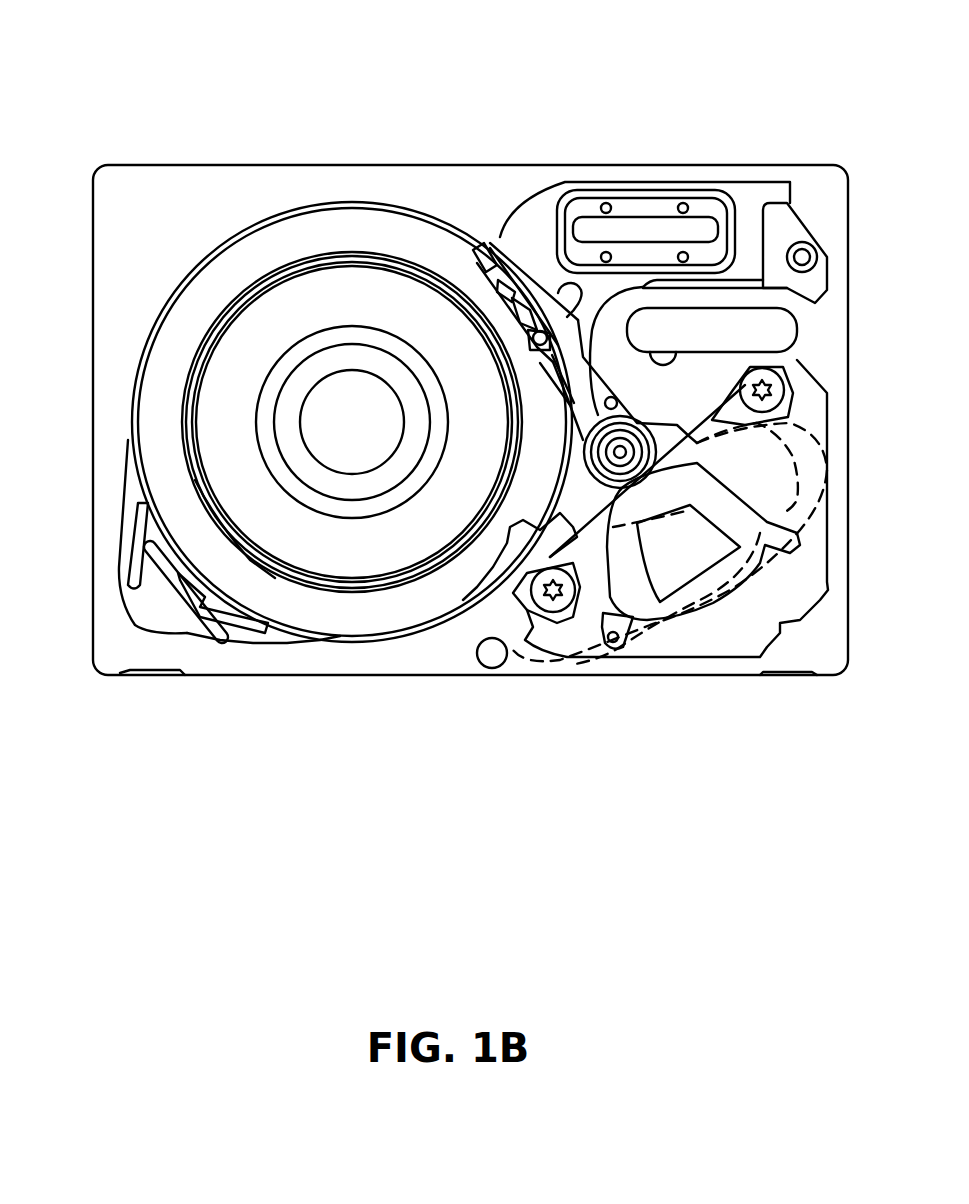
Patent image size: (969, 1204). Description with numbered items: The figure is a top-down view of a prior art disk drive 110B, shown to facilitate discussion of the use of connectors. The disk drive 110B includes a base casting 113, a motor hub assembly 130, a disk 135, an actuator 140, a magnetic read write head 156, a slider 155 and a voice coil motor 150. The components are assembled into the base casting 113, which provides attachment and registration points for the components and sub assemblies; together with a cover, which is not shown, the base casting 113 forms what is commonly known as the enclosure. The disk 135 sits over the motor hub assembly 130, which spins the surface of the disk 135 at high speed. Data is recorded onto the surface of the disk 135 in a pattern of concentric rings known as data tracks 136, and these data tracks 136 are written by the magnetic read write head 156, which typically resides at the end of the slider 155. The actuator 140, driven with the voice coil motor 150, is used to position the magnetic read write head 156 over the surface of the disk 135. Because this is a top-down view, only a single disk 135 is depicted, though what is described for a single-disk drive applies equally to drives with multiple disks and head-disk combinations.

The disk drive 110B is at (178, 102).
The base casting 113 is at (113, 378).
The motor hub assembly 130 is at (353, 415).
The disk 135 is at (283, 250).
The data tracks 136 is at (195, 480).
The actuator 140 is at (583, 475).
The voice coil motor 150 is at (690, 620).
The slider 155 is at (490, 245).
The magnetic read write head 156 is at (482, 260).